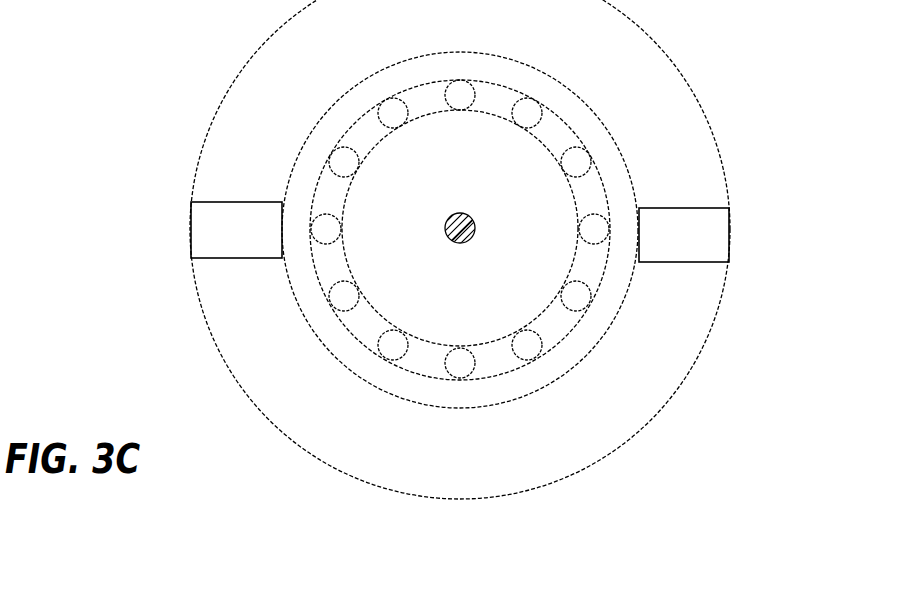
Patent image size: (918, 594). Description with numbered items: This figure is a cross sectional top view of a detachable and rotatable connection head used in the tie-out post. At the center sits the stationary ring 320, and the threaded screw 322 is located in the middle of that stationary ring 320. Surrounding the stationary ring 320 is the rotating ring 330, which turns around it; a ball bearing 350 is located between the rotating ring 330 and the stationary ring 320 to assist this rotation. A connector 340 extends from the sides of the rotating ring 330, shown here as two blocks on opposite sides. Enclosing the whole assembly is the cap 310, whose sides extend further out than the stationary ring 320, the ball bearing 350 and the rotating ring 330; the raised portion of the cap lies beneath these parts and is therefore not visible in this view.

The cap 310 is at (597, 410).
The stationary ring 320 is at (415, 158).
The threaded screw 322 is at (462, 230).
The rotating ring 330 is at (593, 323).
The connector 340 is at (191, 230).
The ball bearing 350 is at (548, 127).